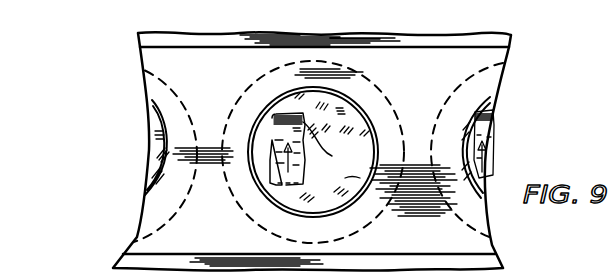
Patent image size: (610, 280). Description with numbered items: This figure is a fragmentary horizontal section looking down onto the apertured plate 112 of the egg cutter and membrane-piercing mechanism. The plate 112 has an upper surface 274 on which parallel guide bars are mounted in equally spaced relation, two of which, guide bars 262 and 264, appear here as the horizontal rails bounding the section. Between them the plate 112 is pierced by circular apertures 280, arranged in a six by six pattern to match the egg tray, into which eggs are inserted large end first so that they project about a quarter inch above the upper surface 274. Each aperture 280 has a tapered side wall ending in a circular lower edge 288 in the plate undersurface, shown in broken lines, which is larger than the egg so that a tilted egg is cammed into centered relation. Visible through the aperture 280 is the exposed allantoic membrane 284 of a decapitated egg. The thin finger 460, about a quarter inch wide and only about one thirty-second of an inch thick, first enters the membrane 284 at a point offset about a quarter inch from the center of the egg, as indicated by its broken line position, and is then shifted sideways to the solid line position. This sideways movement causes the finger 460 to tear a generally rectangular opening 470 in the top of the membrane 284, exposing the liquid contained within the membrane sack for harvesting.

The plate 112 is at (149, 93).
The guide bar 262 is at (139, 46).
The guide bar 264 is at (122, 257).
The upper surface 274 is at (148, 243).
The circular aperture 280 is at (295, 198).
The allantoic membrane 284 is at (308, 149).
The circular lower edge 288 is at (262, 240).
The finger 460 is at (333, 157).
The rectangular opening 470 is at (268, 141).